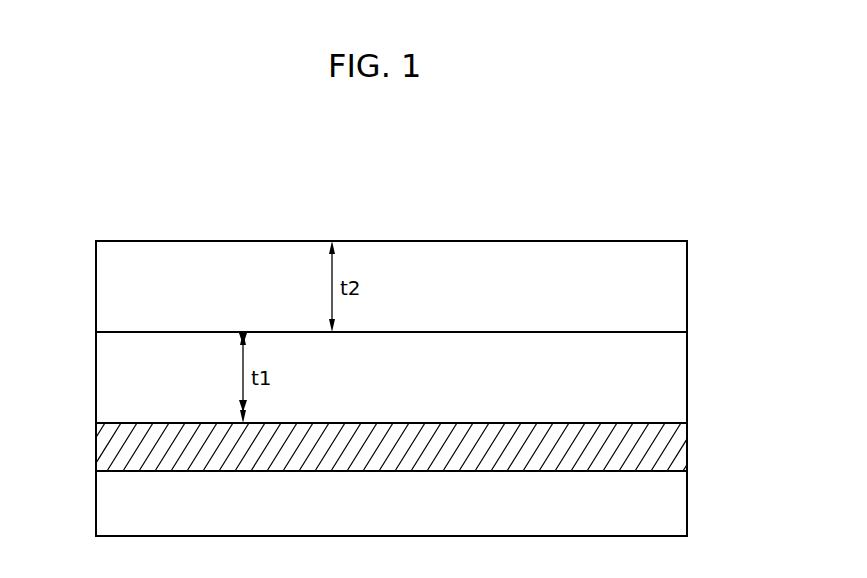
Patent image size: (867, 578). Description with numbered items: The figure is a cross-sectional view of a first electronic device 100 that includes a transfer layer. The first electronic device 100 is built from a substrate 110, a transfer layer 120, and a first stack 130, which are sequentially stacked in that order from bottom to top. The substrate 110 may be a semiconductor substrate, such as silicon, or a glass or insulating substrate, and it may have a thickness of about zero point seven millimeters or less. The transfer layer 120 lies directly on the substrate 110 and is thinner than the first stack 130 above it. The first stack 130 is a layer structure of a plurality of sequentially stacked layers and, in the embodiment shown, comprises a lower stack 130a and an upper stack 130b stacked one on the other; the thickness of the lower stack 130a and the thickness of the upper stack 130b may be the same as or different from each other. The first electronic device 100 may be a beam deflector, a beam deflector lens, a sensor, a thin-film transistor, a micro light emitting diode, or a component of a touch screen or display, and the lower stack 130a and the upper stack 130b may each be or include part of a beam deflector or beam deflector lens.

The first electronic device 100 is at (697, 228).
The substrate 110 is at (682, 504).
The transfer layer 120 is at (682, 448).
The first stack 130 is at (80, 241).
The lower stack 130a is at (682, 379).
The upper stack 130b is at (682, 287).